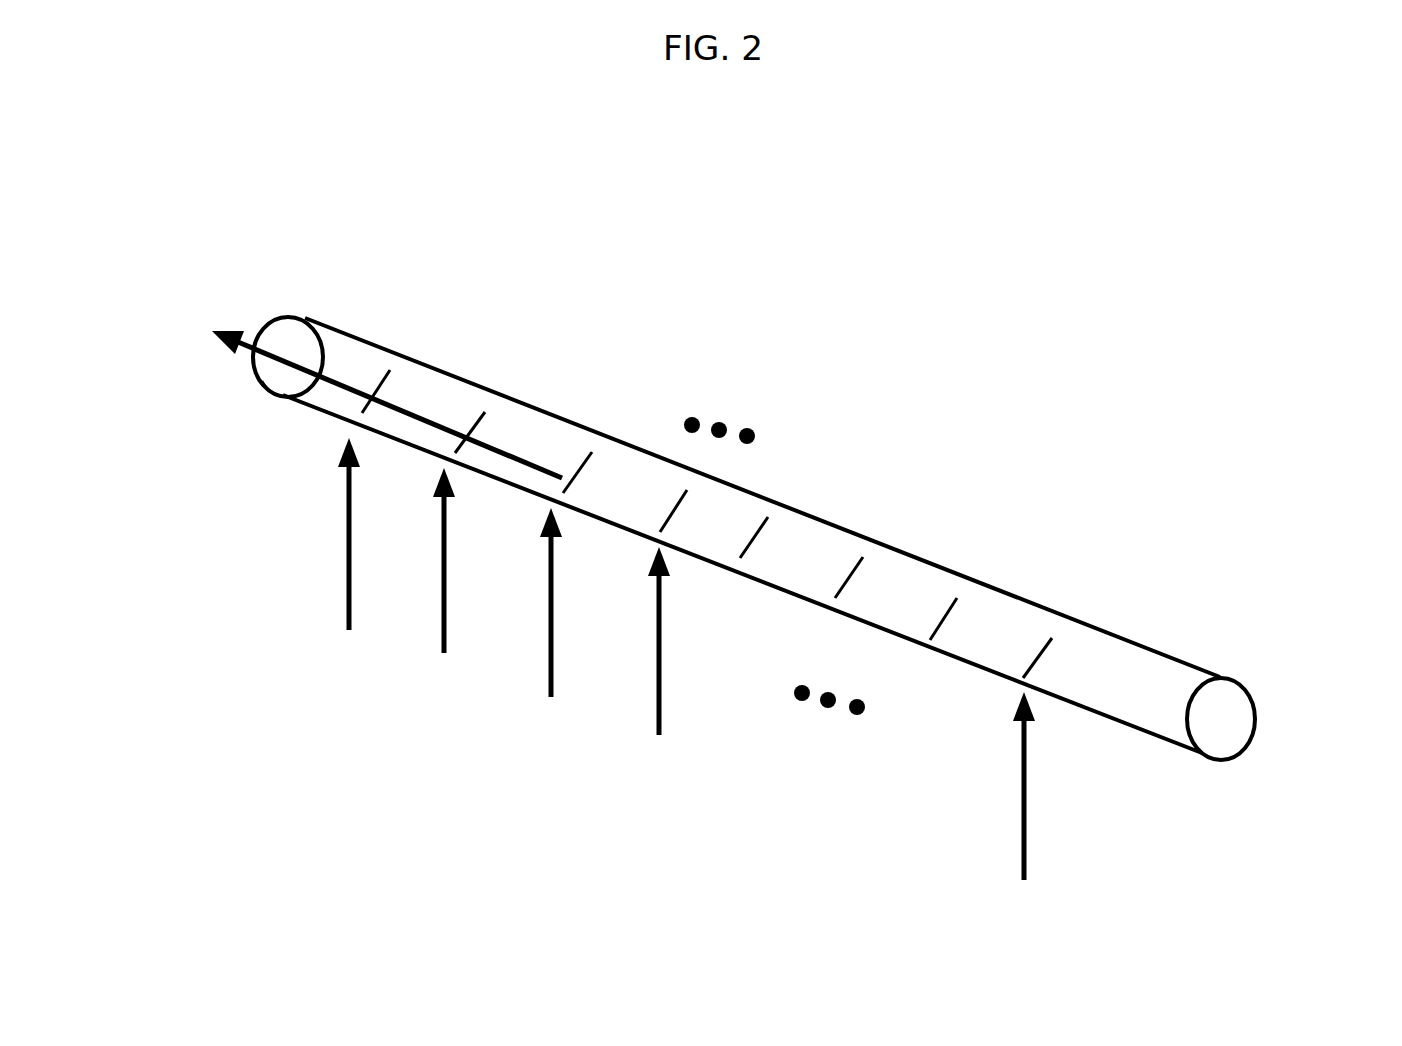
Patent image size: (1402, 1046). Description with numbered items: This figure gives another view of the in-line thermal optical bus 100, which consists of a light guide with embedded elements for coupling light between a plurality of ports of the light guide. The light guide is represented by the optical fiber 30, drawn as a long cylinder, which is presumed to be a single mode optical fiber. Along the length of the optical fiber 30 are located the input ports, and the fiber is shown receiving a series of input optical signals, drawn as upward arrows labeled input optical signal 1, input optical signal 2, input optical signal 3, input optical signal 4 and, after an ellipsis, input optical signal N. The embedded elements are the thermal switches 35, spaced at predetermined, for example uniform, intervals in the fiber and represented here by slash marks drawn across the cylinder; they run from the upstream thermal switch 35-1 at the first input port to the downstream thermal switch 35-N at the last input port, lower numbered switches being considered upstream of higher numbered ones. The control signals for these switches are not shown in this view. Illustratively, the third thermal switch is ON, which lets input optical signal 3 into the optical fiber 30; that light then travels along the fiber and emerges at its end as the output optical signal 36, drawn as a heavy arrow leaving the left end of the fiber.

The optical bus 100 is at (290, 107).
The optical fiber 30 is at (1227, 660).
The thermal switches 35 is at (395, 303).
The thermal switch 35-1 is at (376, 391).
The thermal switch 35-N is at (1037, 658).
The output optical signal 36 is at (308, 357).
The input optical signal 1 is at (349, 561).
The input optical signal 2 is at (444, 591).
The input optical signal 3 is at (551, 631).
The input optical signal 4 is at (659, 670).
The input optical signal N is at (1024, 808).